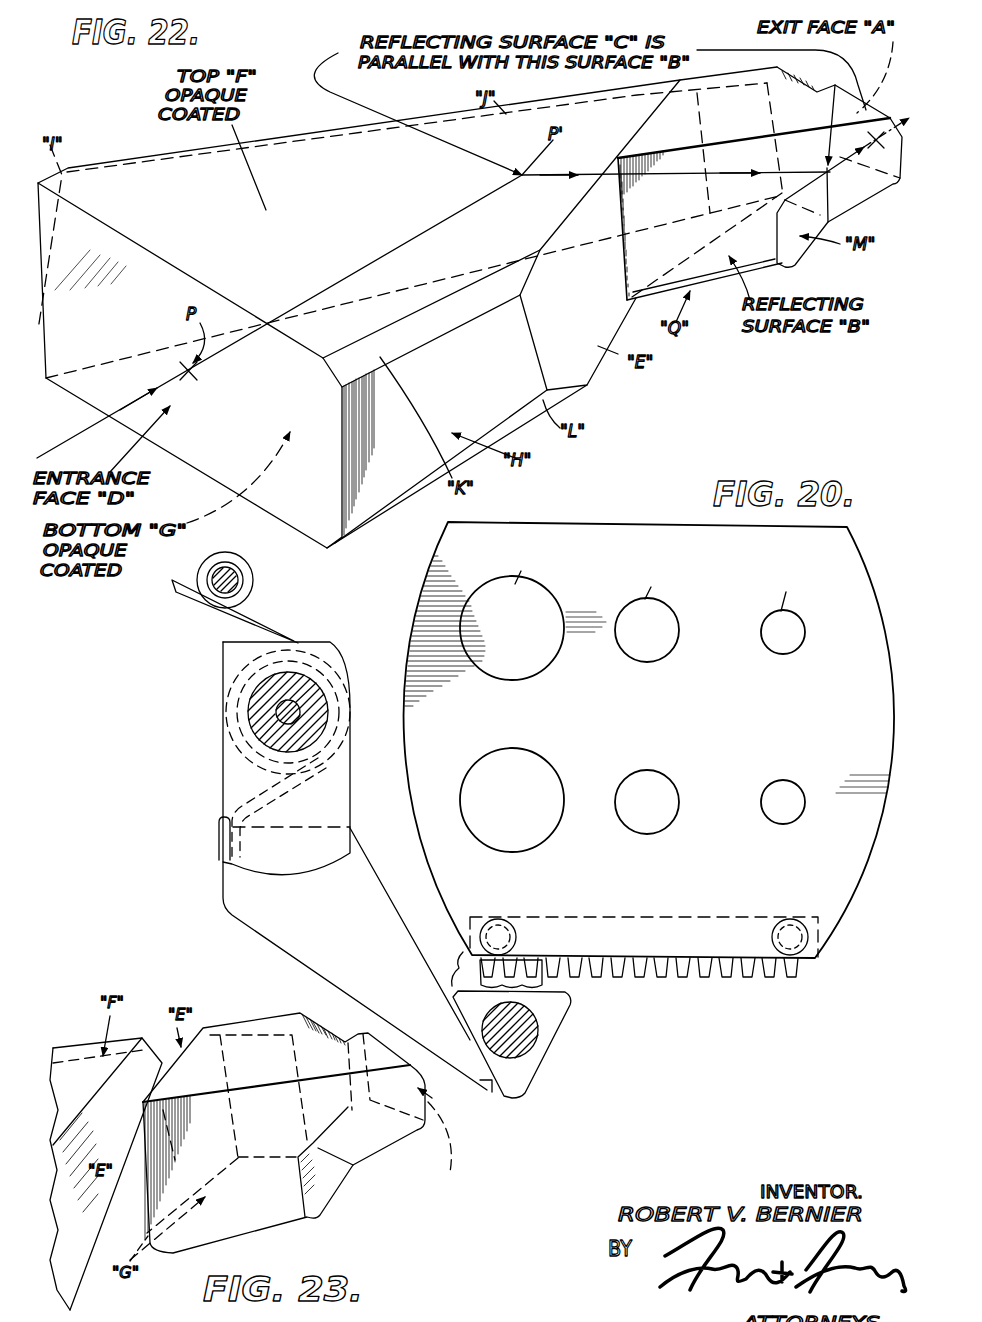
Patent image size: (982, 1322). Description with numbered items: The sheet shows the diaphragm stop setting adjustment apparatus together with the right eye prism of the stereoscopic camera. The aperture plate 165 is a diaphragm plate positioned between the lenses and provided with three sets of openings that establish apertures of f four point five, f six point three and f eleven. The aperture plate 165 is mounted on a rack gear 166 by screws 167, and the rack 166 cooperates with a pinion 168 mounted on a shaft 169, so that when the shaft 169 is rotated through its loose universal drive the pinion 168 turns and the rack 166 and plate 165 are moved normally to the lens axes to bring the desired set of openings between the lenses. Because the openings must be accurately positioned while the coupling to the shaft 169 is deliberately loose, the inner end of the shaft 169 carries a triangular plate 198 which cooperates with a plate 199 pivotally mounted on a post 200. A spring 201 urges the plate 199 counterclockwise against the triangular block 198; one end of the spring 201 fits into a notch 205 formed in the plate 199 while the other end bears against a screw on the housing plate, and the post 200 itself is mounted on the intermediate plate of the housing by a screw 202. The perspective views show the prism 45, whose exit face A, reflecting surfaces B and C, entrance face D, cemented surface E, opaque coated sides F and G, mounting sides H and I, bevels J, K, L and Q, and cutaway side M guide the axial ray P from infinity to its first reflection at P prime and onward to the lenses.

In FIG. 22, the right eye prism 45 is at (162, 186).
In FIG. 23, the right eye prism 45 is at (271, 1234).
In FIG. 20, the aperture plate 165 is at (578, 523).
In FIG. 20, the rack gear 166 is at (767, 973).
In FIG. 20, the screws 167 is at (507, 927).
In FIG. 20, the pinion 168 is at (544, 977).
In FIG. 20, the shaft 169 is at (527, 1035).
In FIG. 20, the triangular plate 198 is at (558, 1011).
In FIG. 20, the plate 199 is at (486, 1085).
In FIG. 20, the post 200 is at (250, 708).
In FIG. 20, the spring 201 is at (230, 623).
In FIG. 20, the screw 202 is at (291, 700).
In FIG. 20, the notch 205 is at (243, 843).